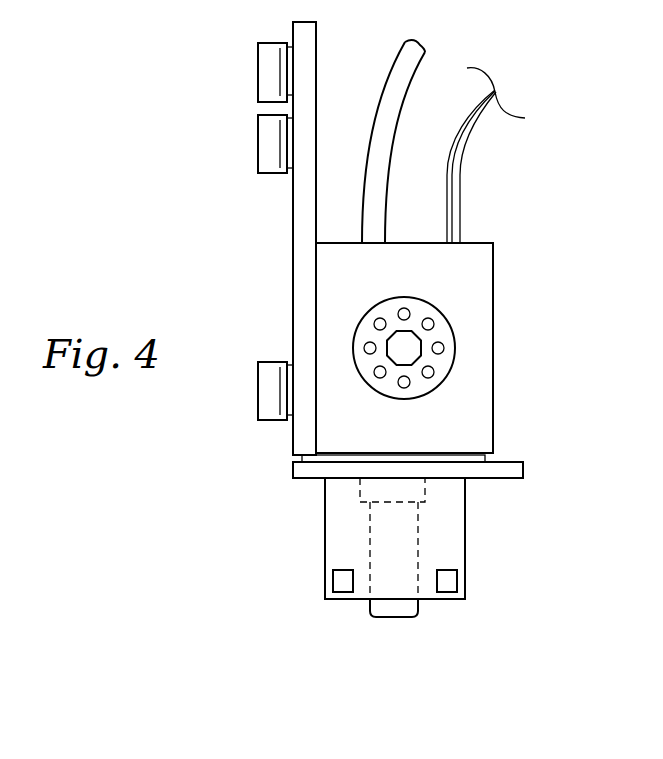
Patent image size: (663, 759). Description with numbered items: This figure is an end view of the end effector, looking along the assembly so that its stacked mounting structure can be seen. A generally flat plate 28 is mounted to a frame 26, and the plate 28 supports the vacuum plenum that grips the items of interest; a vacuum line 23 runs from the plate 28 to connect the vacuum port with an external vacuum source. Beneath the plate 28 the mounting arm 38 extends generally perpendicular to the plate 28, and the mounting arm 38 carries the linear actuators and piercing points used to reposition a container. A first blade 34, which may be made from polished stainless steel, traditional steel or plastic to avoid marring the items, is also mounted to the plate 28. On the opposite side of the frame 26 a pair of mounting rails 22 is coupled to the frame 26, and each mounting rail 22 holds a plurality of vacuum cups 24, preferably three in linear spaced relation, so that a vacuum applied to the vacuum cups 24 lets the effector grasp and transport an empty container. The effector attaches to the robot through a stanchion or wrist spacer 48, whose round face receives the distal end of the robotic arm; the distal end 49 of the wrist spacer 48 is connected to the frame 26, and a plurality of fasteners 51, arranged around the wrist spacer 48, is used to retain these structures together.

The mounting rail 22 is at (302, 257).
The vacuum line 23 is at (382, 110).
The vacuum cup 24 is at (258, 78).
The frame 26 is at (468, 288).
The plate 28 is at (513, 460).
The first blade 34 is at (395, 610).
The mounting arm 38 is at (452, 538).
The wrist spacer 48 is at (449, 348).
The distal end 49 is at (417, 310).
The fasteners 51 is at (406, 388).